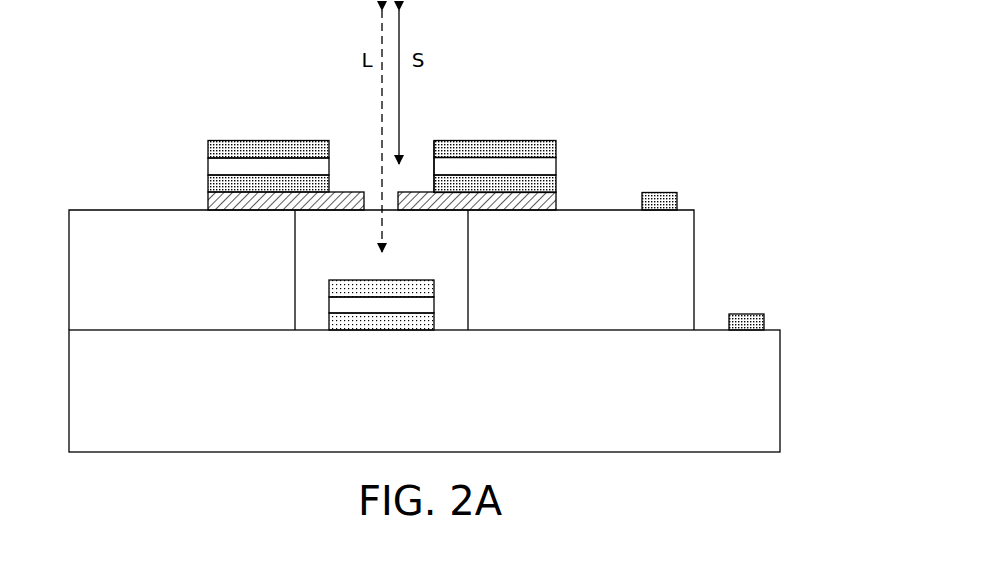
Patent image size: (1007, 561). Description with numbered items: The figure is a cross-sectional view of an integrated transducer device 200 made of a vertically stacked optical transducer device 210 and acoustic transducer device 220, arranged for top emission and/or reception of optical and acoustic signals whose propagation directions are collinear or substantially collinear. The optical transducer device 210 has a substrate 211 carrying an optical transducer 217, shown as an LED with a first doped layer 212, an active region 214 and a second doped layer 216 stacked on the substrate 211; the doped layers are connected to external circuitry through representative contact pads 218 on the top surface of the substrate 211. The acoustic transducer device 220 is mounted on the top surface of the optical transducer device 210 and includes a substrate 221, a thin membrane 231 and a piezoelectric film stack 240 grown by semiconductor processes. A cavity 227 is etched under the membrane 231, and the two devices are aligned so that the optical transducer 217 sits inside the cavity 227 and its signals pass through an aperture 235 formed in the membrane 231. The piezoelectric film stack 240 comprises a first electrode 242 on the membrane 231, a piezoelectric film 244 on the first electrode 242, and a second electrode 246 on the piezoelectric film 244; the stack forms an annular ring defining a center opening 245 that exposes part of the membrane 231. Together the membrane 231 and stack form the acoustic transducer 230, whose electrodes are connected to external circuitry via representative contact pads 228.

The integrated transducer device 200 is at (533, 50).
The optical transducer device 210 is at (804, 294).
The substrate 211 is at (98, 432).
The first doped layer 212 is at (329, 310).
The active region 214 is at (329, 292).
The second doped layer 216 is at (363, 279).
The optical transducer 217 is at (437, 280).
The contact pads 218 is at (747, 332).
The acoustic transducer device 220 is at (683, 103).
The substrate 221 is at (98, 310).
The cavity 227 is at (450, 227).
The contact pads 228 is at (660, 210).
The acoustic transducer 230 is at (627, 140).
The membrane 231 is at (259, 212).
The aperture 235 is at (364, 175).
The piezoelectric film stack 240 is at (560, 140).
The first electrode 242 is at (207, 173).
The piezoelectric film 244 is at (207, 157).
The center opening 245 is at (434, 156).
The second electrode 246 is at (243, 139).